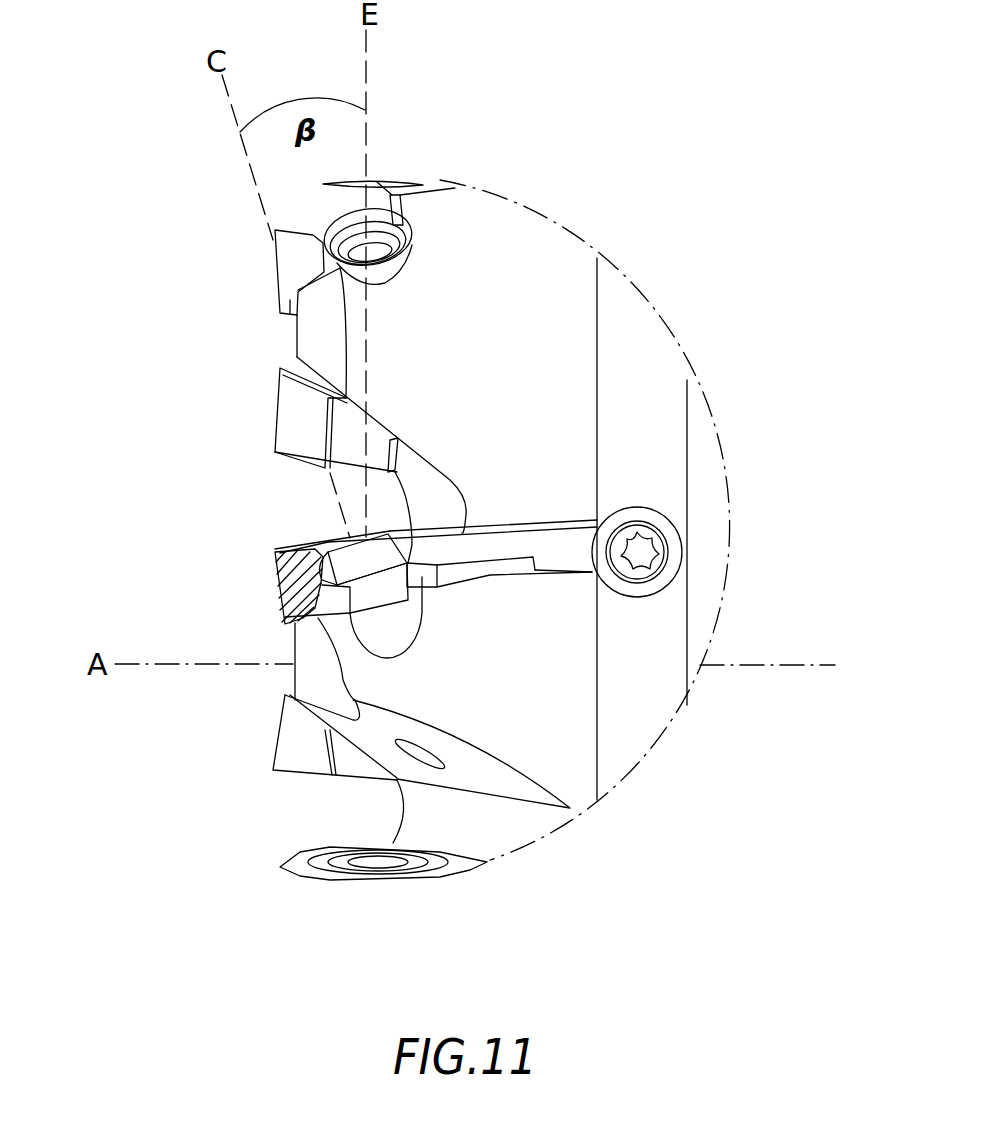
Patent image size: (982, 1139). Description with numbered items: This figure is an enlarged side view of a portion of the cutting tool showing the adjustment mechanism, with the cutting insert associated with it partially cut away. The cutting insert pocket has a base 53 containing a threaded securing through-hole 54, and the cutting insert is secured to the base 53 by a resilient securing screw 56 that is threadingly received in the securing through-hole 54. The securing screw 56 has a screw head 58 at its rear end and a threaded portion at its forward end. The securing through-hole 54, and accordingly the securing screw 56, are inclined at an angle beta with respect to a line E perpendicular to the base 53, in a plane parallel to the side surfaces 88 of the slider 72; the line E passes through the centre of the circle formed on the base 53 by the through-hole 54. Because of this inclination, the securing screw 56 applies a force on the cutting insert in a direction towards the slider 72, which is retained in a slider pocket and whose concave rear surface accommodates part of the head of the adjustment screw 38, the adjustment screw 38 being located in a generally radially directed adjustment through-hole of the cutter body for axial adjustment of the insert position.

The adjustment screw 38 is at (640, 552).
The base 53 is at (318, 620).
The securing through-hole 54 is at (418, 753).
The securing screw 56 is at (415, 545).
The screw head 58 is at (408, 548).
The slider 72 is at (568, 548).
The side surfaces 88 is at (515, 557).